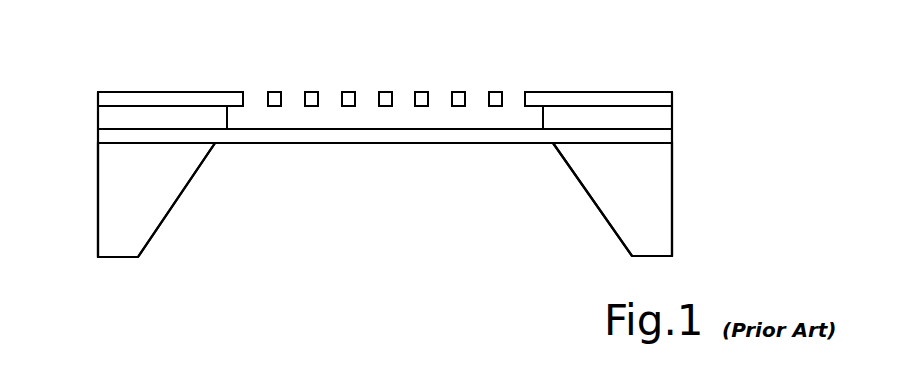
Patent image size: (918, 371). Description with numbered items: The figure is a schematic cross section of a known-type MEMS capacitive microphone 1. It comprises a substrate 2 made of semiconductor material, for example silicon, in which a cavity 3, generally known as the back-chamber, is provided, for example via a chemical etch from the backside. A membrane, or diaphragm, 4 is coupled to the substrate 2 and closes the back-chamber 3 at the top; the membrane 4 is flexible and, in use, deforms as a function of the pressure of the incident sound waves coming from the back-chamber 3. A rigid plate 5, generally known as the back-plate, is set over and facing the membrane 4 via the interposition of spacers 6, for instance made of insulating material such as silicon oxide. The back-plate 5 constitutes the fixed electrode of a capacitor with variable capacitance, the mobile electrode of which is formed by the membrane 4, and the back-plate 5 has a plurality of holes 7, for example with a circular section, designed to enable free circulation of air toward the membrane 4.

The MEMS capacitive microphone 1 is at (695, 90).
The substrate 2 is at (107, 217).
The cavity 3 is at (172, 220).
The membrane 4 is at (105, 135).
The rigid plate 5 is at (110, 98).
The spacers 6 is at (107, 120).
The holes 7 is at (267, 93).